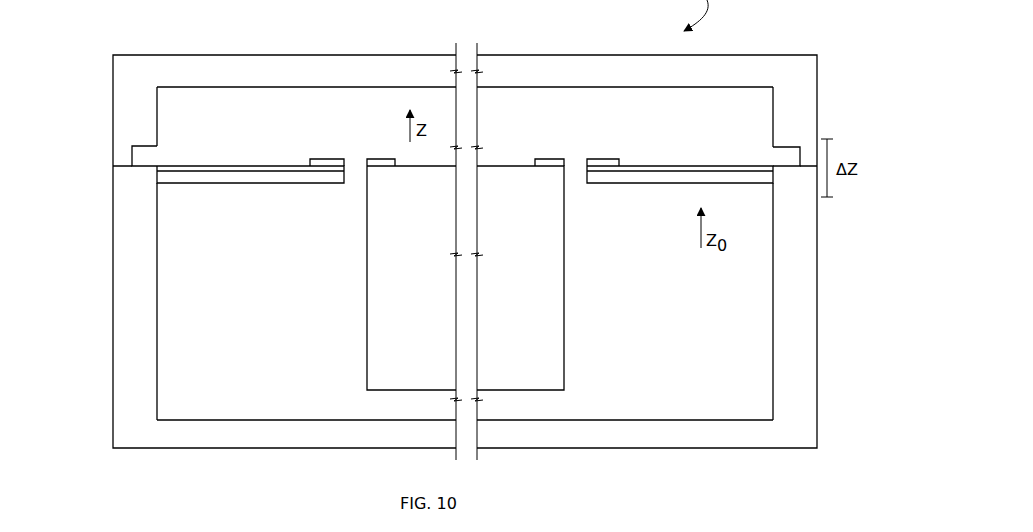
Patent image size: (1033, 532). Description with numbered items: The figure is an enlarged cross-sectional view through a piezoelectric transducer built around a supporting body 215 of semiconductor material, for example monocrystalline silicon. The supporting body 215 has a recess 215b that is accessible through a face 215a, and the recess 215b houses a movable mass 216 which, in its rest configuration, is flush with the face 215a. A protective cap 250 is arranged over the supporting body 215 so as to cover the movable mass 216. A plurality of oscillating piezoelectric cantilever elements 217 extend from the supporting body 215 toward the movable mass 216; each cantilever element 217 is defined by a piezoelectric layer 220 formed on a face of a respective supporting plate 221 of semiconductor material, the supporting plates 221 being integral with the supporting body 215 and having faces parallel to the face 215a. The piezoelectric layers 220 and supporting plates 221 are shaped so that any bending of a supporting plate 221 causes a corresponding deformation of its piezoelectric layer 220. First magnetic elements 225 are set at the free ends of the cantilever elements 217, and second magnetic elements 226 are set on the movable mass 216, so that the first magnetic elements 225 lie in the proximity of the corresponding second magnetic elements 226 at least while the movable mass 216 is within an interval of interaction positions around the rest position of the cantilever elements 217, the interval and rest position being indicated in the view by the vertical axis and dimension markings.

The protective cap 250 is at (167, 55).
The supporting body 215 is at (222, 432).
The face 215a is at (122, 156).
The recess 215b is at (667, 405).
The movable mass 216 is at (553, 305).
The piezoelectric cantilever element 217 is at (192, 156).
The piezoelectric layer 220 is at (242, 172).
The supporting plate 221 is at (240, 184).
The first magnetic element 225 is at (328, 158).
The second magnetic element 226 is at (382, 158).